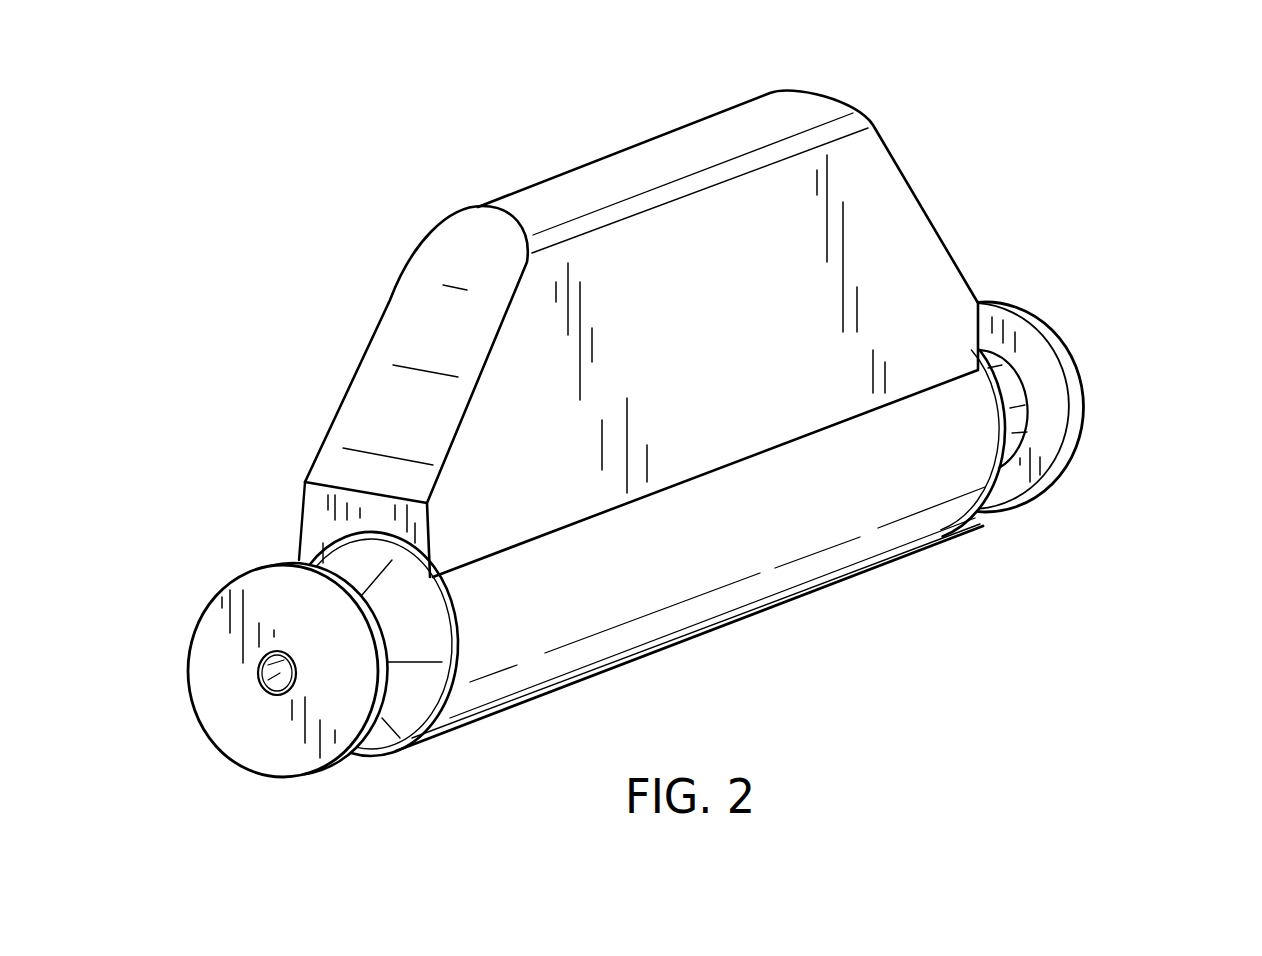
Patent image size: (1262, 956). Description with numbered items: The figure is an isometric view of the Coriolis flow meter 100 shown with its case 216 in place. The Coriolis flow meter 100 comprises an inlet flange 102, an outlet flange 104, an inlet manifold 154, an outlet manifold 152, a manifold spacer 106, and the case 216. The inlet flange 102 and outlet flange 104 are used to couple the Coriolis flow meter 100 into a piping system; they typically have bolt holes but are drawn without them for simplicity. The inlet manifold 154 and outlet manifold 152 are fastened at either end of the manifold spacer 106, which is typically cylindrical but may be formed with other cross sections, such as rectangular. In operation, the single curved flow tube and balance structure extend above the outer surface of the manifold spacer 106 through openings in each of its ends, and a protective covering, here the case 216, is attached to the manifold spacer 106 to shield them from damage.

The Coriolis flow meter 100 is at (398, 138).
The inlet flange 102 is at (337, 762).
The outlet flange 104 is at (1083, 403).
The manifold spacer 106 is at (868, 567).
The outlet manifold 152 is at (977, 527).
The inlet manifold 154 is at (298, 553).
The case 216 is at (902, 165).